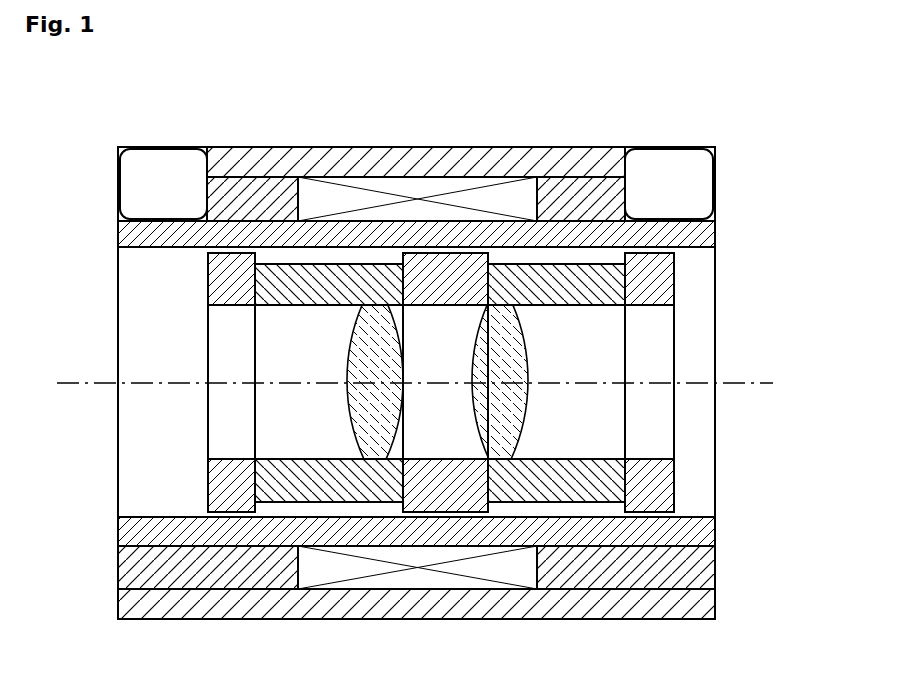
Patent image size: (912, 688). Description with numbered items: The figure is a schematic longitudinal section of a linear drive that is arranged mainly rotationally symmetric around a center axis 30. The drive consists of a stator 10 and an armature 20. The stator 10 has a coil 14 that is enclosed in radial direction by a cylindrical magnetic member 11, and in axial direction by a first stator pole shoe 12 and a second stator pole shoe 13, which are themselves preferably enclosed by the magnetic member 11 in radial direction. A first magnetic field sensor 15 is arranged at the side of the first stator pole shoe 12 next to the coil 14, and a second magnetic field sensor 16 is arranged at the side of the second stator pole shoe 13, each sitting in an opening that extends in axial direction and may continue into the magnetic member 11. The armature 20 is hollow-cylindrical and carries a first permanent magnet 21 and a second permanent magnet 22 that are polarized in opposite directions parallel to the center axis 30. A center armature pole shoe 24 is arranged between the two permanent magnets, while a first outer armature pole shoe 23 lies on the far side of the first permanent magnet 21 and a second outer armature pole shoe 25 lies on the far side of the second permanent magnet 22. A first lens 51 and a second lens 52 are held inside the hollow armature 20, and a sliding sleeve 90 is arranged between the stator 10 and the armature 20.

The stator 10 is at (732, 192).
The magnetic member 11 is at (412, 165).
The first stator pole shoe 12 is at (255, 195).
The second stator pole shoe 13 is at (583, 195).
The coil 14 is at (513, 195).
The first magnetic field sensor 15 is at (165, 178).
The second magnetic field sensor 16 is at (676, 178).
The armature 20 is at (484, 382).
The first permanent magnet 21 is at (305, 295).
The second permanent magnet 22 is at (577, 295).
The first outer armature pole shoe 23 is at (232, 295).
The center armature pole shoe 24 is at (447, 295).
The second outer armature pole shoe 25 is at (652, 295).
The center axis 30 is at (765, 386).
The first lens 51 is at (366, 415).
The second lens 52 is at (514, 412).
The sliding sleeve 90 is at (713, 236).